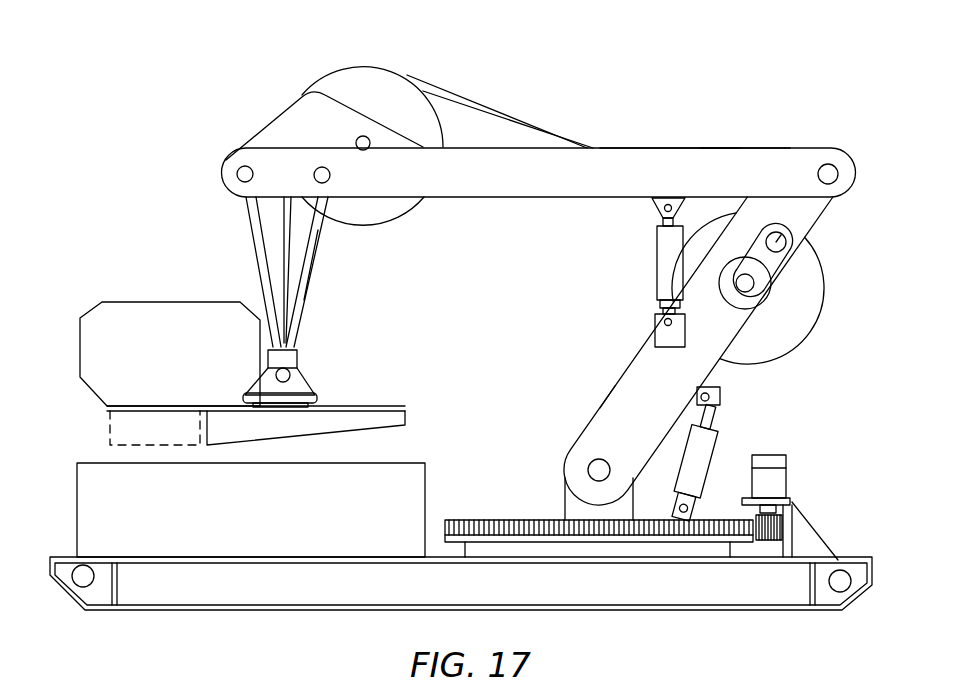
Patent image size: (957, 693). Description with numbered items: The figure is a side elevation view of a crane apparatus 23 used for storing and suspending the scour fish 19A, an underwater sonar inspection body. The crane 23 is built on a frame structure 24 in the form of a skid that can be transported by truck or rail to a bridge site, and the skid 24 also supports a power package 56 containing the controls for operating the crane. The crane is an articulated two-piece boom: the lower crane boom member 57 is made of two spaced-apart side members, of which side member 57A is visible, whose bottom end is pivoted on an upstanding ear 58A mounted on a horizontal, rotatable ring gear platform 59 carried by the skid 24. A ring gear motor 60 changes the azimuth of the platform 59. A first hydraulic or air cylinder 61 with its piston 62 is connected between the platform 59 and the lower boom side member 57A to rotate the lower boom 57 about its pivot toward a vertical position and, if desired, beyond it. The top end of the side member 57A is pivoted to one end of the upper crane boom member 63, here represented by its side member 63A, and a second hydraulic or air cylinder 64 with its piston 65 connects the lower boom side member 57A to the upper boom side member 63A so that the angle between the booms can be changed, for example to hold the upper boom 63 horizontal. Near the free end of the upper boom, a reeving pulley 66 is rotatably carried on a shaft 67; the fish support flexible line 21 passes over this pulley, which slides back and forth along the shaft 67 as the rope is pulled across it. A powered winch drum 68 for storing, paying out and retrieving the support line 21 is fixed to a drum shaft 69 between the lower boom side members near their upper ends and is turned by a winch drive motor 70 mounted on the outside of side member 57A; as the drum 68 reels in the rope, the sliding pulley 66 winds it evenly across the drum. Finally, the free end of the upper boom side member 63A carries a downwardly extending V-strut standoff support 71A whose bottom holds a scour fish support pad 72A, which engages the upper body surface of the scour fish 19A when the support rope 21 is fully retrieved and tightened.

The scour fish 19A is at (78, 361).
The fish support flexible line 21 is at (470, 102).
The crane apparatus 23 is at (697, 143).
The frame structure 24 is at (870, 590).
The power package 56 is at (268, 511).
The lower crane boom member 57 is at (688, 386).
The lower boom side member 57A is at (617, 386).
The upstanding ear 58A is at (564, 498).
The ring gear platform 59 is at (466, 519).
The ring gear motor 60 is at (787, 478).
The first hydraulic or air cylinder 61 is at (728, 462).
The piston 62 is at (714, 412).
The upper crane boom member 63 is at (624, 186).
The upper boom side member 63A is at (754, 147).
The second hydraulic or air cylinder 64 is at (656, 285).
The piston 65 is at (660, 218).
The reeving pulley 66 is at (336, 71).
The shaft 67 is at (356, 146).
The powered winch drum 68 is at (827, 351).
The drum shaft 69 is at (744, 287).
The winch drive motor 70 is at (786, 239).
The V-strut standoff support 71A is at (310, 278).
The scour fish support pad 72A is at (300, 388).